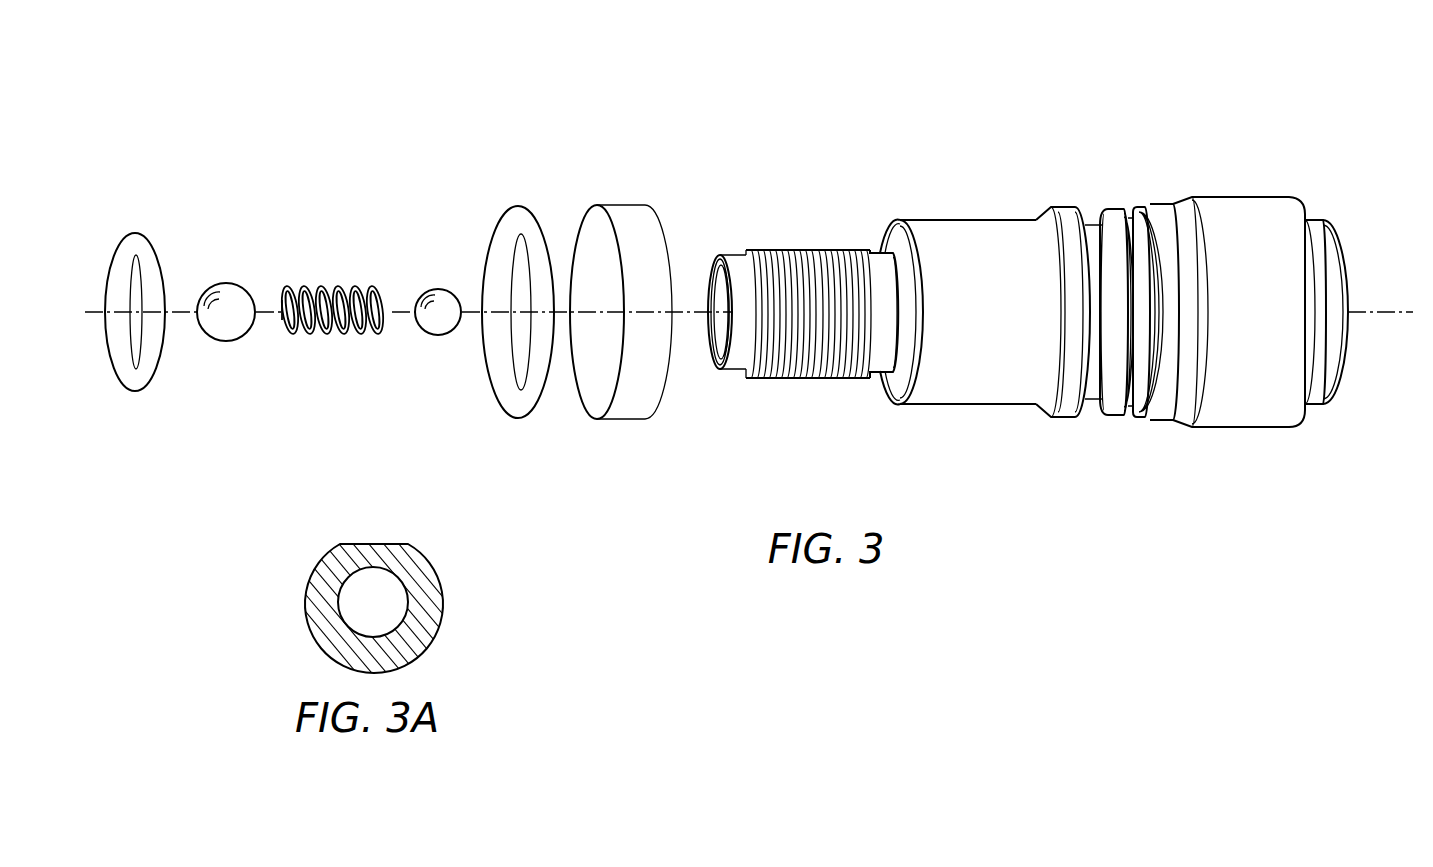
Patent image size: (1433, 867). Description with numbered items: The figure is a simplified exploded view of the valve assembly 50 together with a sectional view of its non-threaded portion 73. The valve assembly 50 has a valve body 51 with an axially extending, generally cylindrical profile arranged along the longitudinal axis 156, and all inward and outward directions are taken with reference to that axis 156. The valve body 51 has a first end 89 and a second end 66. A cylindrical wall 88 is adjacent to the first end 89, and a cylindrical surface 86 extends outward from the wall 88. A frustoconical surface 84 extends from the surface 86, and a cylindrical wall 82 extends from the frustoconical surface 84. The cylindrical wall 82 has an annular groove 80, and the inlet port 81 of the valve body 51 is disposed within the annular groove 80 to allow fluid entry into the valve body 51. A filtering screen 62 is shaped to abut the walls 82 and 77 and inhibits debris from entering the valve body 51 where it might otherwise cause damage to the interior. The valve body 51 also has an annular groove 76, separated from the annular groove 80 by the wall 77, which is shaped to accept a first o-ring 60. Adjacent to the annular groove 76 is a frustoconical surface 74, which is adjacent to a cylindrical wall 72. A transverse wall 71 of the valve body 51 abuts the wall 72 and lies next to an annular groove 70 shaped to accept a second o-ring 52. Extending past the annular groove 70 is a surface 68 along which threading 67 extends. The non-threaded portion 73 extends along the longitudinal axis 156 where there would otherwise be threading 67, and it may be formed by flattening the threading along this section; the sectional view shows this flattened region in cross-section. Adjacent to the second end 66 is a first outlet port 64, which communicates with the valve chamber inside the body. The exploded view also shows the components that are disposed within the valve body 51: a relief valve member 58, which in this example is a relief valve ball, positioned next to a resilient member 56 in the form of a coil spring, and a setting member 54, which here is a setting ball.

In FIG. 3, the valve assembly 50 is at (983, 93).
In FIG. 3, the valve body 51 is at (977, 203).
In FIG. 3, the second o-ring 52 is at (141, 243).
In FIG. 3, the setting member 54 is at (240, 298).
In FIG. 3, the resilient member 56 is at (345, 285).
In FIG. 3, the relief valve member 58 is at (447, 298).
In FIG. 3, the first o-ring 60 is at (525, 218).
In FIG. 3, the filtering screen 62 is at (641, 210).
In FIG. 3, the first outlet port 64 is at (705, 338).
In FIG. 3A, the first outlet port 64 is at (361, 603).
In FIG. 3, the second end 66 is at (730, 371).
In FIG. 3A, the second end 66 is at (309, 643).
In FIG. 3, the threading 67 is at (775, 383).
In FIG. 3A, the threading 67 is at (446, 607).
In FIG. 3, the surface 68 is at (858, 380).
In FIG. 3, the annular groove 70 is at (878, 405).
In FIG. 3, the transverse wall 71 is at (893, 238).
In FIG. 3, the cylindrical wall 72 is at (968, 382).
In FIG. 3, the non-threaded portion 73 is at (779, 248).
In FIG. 3A, the non-threaded portion 73 is at (379, 539).
In FIG. 3, the frustoconical surface 74 is at (1063, 406).
In FIG. 3, the annular groove 76 is at (1092, 418).
In FIG. 3, the wall 77 is at (1123, 408).
In FIG. 3, the annular groove 80 is at (1136, 200).
In FIG. 3, the inlet port 81 is at (1122, 190).
In FIG. 3, the cylindrical wall 82 is at (1156, 207).
In FIG. 3, the frustoconical surface 84 is at (1176, 206).
In FIG. 3, the cylindrical surface 86 is at (1258, 213).
In FIG. 3, the cylindrical wall 88 is at (1322, 232).
In FIG. 3, the first end 89 is at (1347, 248).
In FIG. 3, the longitudinal axis 156 is at (1395, 309).